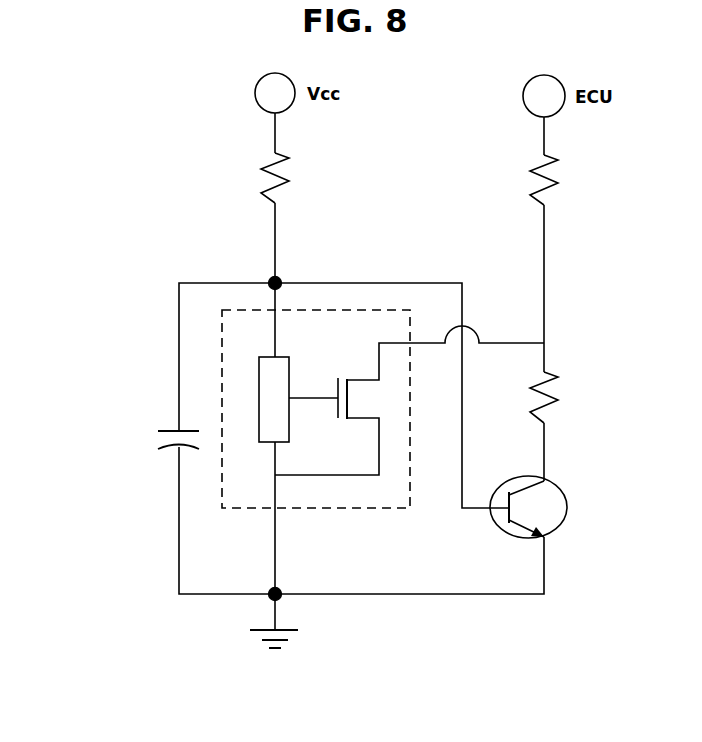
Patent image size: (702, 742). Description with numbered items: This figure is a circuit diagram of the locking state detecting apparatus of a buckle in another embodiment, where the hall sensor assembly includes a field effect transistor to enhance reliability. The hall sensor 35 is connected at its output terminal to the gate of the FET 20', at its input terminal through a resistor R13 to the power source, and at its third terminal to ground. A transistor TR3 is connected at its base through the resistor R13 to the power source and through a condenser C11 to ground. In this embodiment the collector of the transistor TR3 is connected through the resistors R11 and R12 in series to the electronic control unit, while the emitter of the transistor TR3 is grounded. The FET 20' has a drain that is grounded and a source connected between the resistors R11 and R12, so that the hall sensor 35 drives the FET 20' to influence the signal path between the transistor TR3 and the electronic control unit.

The hall sensor 35 is at (259, 386).
The FET 20' is at (383, 492).
The resistor R11 is at (567, 180).
The resistor R12 is at (567, 397).
The resistor R13 is at (299, 178).
The condenser C11 is at (153, 441).
The transistor TR3 is at (552, 507).